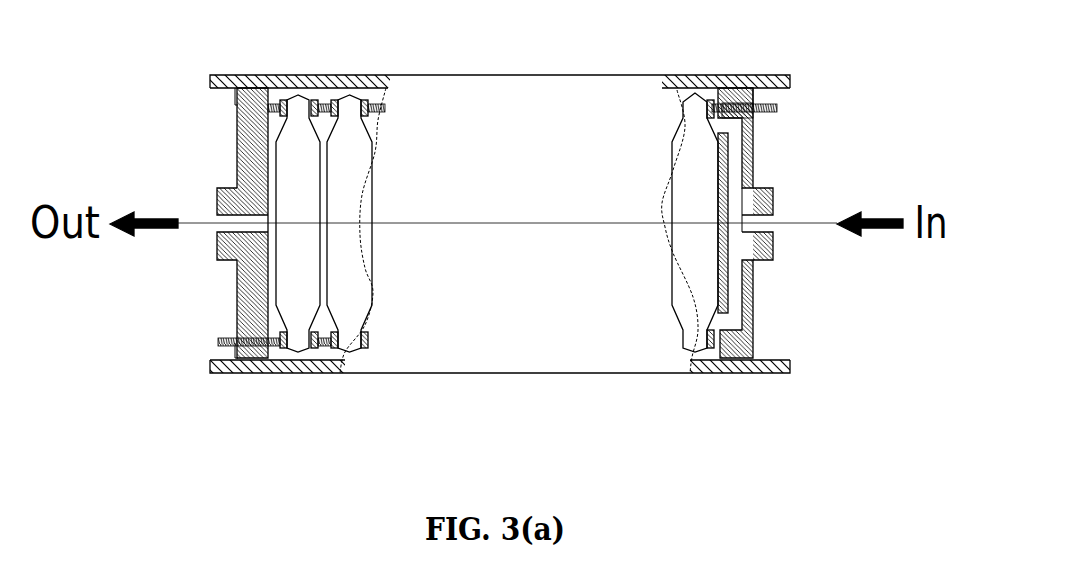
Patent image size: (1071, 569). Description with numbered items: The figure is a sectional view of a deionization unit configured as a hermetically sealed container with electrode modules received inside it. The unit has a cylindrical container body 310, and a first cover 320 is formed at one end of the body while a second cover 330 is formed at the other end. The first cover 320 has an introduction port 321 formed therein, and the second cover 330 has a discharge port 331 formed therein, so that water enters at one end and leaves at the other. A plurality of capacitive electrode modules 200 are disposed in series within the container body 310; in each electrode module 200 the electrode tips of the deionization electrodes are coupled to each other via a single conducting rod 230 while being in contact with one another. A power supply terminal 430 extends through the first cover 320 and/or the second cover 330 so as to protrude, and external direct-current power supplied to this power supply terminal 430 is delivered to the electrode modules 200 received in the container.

The cylindrical container body 310 is at (491, 100).
The first cover 320 is at (237, 141).
The introduction port 321 is at (218, 238).
The second cover 330 is at (774, 195).
The discharge port 331 is at (775, 233).
The power supply terminal 430 is at (218, 343).
The electrode module 200 is at (360, 150).
The conducting rod 230 is at (321, 374).